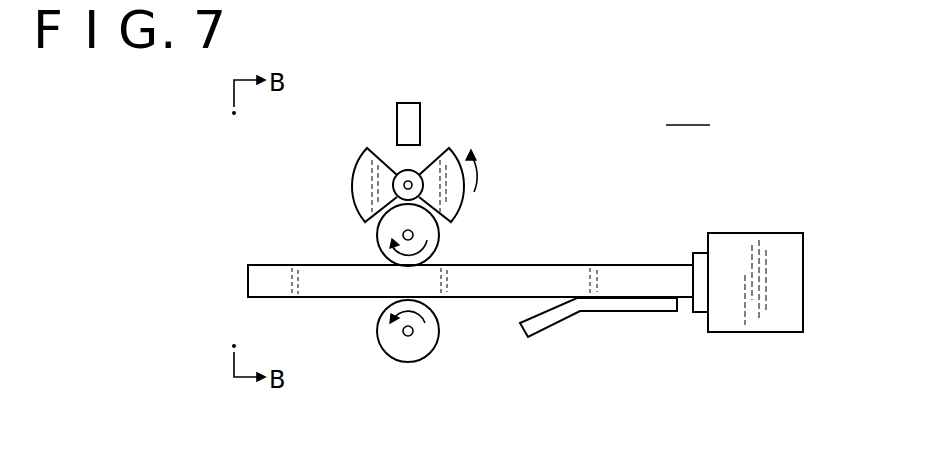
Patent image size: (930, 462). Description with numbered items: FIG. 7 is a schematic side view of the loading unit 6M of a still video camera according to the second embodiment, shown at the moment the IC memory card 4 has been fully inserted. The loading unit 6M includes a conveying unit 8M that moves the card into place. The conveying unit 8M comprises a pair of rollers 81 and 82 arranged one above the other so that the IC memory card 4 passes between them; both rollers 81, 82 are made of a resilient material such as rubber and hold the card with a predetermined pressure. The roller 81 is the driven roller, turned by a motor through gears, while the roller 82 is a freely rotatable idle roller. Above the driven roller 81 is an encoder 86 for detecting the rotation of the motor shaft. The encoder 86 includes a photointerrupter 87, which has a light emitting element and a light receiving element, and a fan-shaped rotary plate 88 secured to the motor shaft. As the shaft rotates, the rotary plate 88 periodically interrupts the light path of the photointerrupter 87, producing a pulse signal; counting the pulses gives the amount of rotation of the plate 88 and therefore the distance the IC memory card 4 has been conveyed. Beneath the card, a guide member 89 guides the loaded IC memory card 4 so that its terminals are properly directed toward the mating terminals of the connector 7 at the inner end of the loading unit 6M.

The IC memory card 4 is at (268, 275).
The connector block 7 is at (700, 253).
The loading unit 6M is at (688, 111).
The conveying unit 8M is at (512, 184).
The roller 81 is at (383, 233).
The roller 82 is at (385, 338).
The encoder 86 is at (442, 131).
The photointerrupter 87 is at (397, 120).
The fan-shaped rotary plate 88 is at (357, 180).
The guide member 89 is at (627, 303).